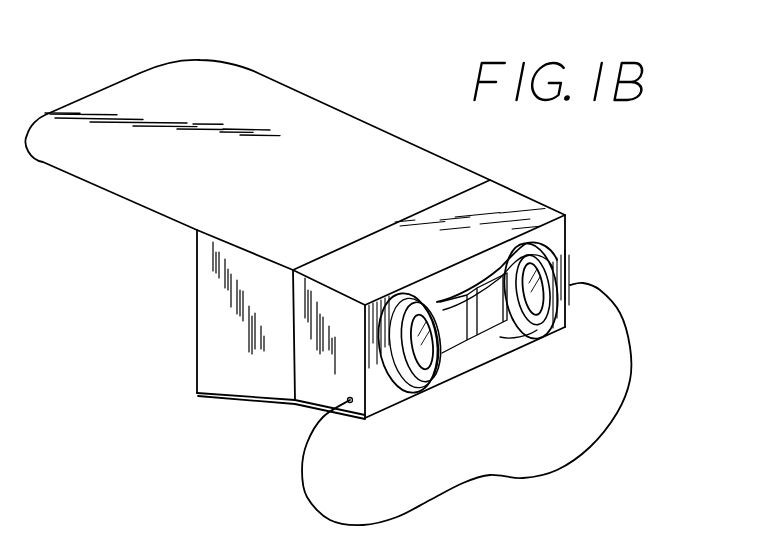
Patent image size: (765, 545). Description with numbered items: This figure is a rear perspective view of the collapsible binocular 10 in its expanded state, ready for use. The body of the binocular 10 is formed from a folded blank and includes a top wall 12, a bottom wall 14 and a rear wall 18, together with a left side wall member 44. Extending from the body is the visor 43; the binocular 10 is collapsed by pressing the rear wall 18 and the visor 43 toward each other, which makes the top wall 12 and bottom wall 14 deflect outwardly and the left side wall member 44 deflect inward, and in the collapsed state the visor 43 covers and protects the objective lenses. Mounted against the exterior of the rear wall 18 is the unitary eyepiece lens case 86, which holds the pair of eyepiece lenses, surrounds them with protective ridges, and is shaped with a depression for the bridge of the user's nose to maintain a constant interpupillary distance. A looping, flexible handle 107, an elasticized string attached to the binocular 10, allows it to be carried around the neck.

The collapsible binocular 10 is at (520, 151).
The top wall 12 is at (522, 207).
The bottom wall 14 is at (288, 407).
The rear wall 18 is at (497, 348).
The visor 43 is at (175, 78).
The left side wall member 44 is at (197, 331).
The unitary eyepiece lens case 86 is at (443, 357).
The looping, flexible handle 107 is at (577, 463).